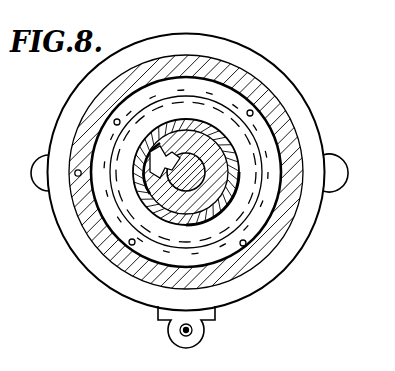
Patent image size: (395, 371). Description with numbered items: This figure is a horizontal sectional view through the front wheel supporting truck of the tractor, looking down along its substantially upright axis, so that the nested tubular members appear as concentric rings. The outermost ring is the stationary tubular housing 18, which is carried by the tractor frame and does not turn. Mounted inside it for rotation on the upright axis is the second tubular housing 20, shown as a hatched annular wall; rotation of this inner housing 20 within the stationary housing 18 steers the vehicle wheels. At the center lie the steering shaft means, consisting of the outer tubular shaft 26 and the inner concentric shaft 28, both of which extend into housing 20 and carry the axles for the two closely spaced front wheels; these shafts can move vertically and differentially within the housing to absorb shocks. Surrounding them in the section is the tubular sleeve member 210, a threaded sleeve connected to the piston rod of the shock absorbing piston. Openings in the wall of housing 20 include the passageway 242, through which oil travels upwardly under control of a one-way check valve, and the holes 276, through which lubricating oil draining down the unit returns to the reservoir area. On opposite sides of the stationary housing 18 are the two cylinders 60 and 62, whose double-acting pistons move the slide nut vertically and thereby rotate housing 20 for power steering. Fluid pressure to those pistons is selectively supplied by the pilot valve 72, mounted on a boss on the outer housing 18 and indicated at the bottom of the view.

The stationary tubular housing 18 is at (284, 74).
The second tubular housing 20 is at (285, 110).
The outer tubular shaft 26 is at (192, 121).
The inner concentric shaft 28 is at (165, 163).
The cylinder 60 is at (328, 153).
The cylinder 62 is at (41, 156).
The pilot valve 72 is at (214, 331).
The tubular sleeve member 210 is at (202, 226).
The passageway 242 is at (76, 176).
The holes 276 is at (253, 115).